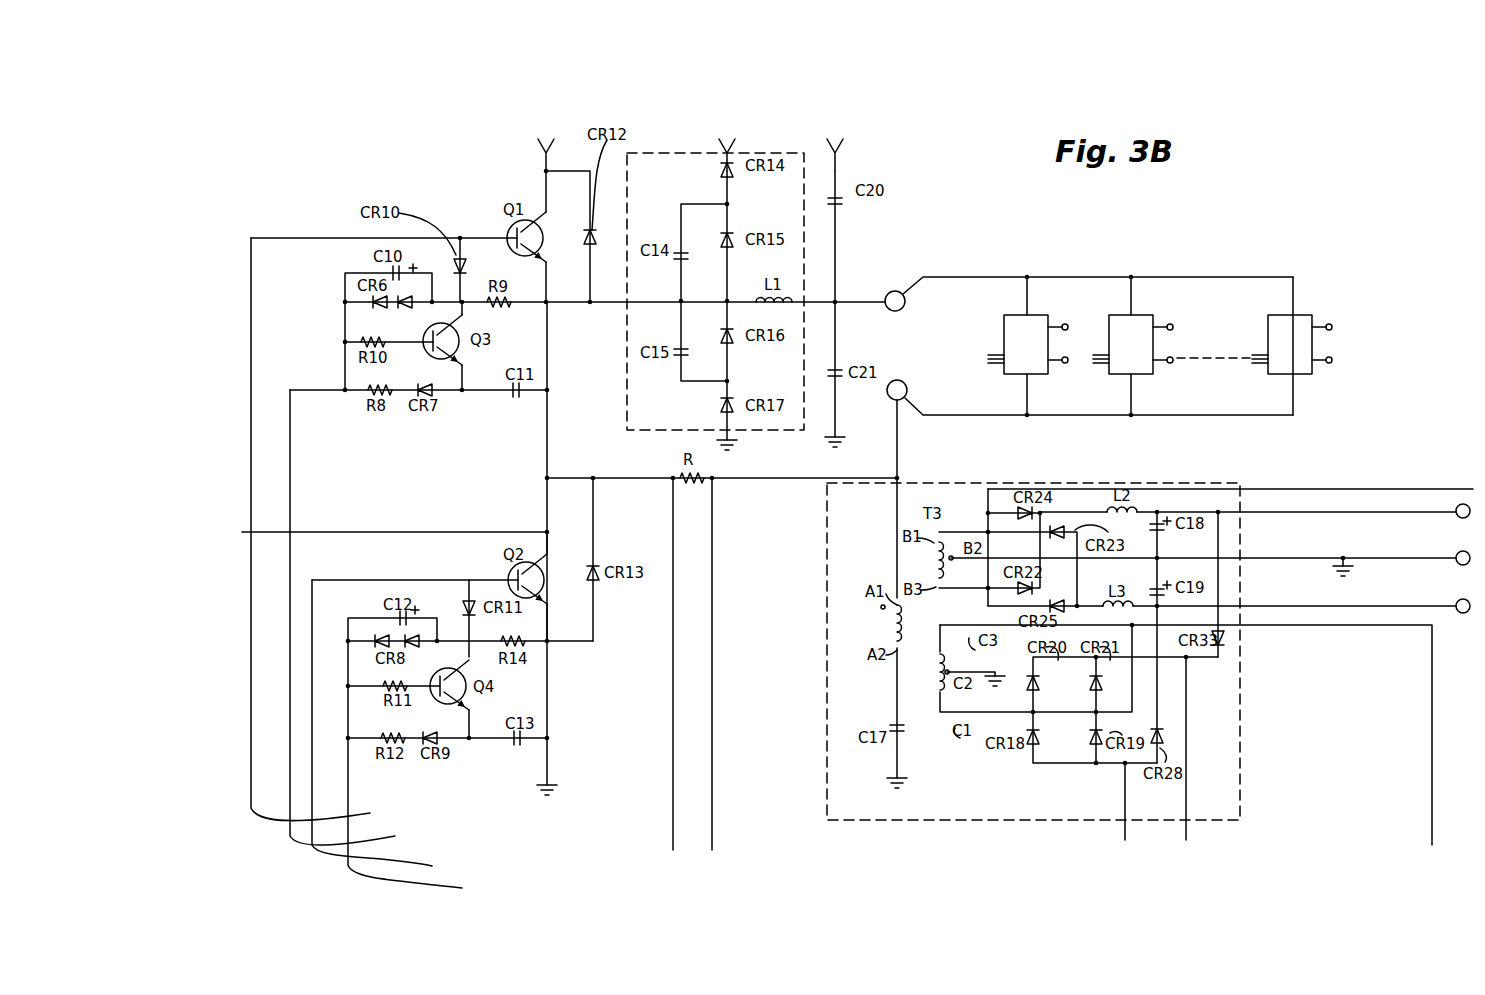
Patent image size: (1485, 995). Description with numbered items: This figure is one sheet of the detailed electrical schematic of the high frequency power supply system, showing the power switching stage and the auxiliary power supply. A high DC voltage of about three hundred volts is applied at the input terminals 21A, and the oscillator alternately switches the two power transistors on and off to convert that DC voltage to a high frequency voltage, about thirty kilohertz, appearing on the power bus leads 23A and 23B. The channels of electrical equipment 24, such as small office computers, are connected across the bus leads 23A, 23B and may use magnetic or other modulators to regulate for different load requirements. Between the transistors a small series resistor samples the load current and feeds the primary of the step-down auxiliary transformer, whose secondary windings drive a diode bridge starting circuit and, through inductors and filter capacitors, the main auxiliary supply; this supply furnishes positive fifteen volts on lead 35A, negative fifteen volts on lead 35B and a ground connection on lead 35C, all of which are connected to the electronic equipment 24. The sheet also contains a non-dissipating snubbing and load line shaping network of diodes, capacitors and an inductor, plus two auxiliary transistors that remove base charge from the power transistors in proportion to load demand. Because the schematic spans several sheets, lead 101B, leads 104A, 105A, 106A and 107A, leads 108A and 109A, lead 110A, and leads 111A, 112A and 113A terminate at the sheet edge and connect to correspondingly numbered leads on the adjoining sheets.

The input terminal 21A is at (538, 137).
The power bus lead 23A is at (958, 277).
The power bus lead 23B is at (963, 415).
The channels incorporating electrical equipment 24 is at (1004, 323).
The lead 35A is at (988, 355).
The lead 35B is at (988, 365).
The lead 35C is at (988, 359).
The lead 101B is at (424, 532).
The lead 104A is at (336, 533).
The lead 105A is at (367, 620).
The lead 106A is at (396, 728).
The lead 107A is at (429, 769).
The lead 108A is at (673, 840).
The lead 109A is at (712, 840).
The lead 110A is at (1367, 487).
The lead 111A is at (1125, 840).
The lead 112A is at (1186, 838).
The lead 113A is at (1432, 840).